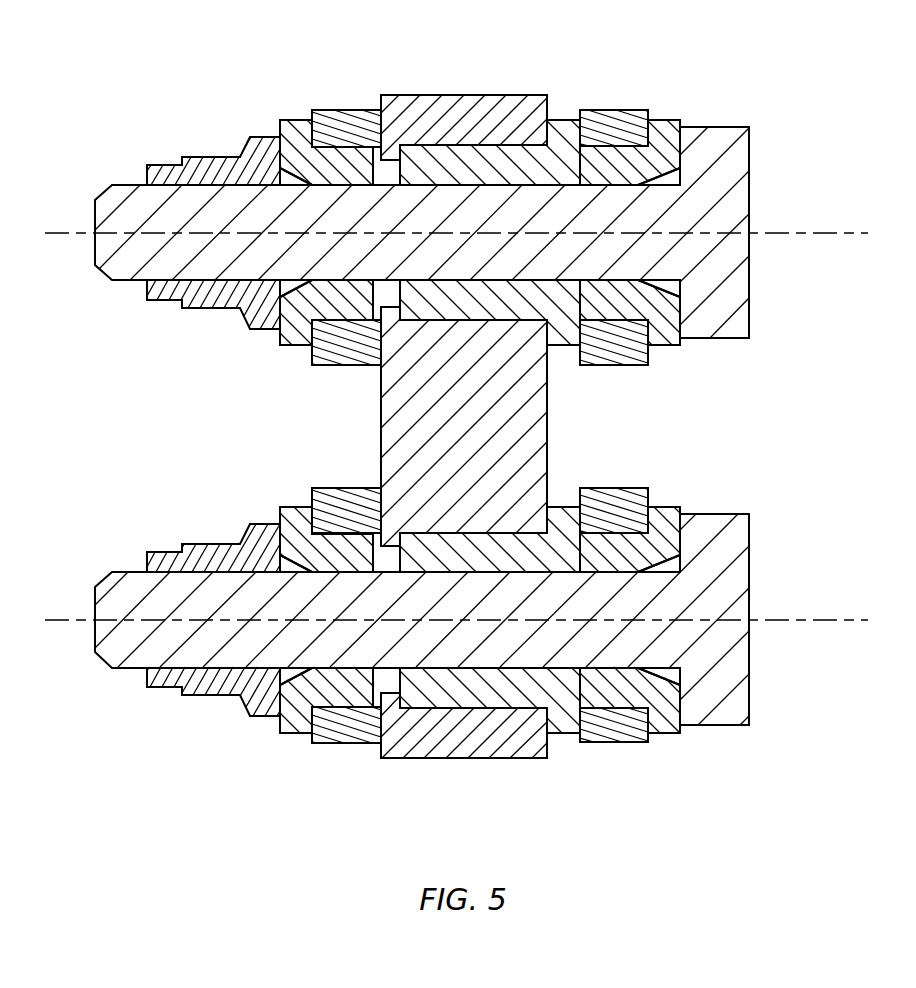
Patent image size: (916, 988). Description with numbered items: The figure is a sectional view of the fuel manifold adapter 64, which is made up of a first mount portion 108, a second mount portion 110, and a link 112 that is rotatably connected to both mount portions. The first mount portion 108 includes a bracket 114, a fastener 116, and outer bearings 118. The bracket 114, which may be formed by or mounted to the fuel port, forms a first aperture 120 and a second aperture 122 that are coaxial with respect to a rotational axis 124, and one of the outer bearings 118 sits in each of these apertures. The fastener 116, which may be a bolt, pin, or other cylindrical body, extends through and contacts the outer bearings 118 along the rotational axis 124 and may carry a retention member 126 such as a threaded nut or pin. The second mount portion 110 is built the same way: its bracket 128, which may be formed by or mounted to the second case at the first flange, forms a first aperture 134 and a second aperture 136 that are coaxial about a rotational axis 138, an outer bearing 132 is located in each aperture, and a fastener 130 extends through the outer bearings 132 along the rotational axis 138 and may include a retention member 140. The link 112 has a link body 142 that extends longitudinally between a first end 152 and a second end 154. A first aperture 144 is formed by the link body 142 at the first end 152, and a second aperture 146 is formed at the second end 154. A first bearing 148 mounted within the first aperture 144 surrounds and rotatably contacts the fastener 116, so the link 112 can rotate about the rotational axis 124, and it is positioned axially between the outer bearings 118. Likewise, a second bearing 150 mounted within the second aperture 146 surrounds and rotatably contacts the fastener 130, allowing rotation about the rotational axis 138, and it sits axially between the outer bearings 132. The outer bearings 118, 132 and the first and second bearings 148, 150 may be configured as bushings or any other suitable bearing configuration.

The fuel manifold adapter 64 is at (466, 430).
The first mount portion 108 is at (762, 204).
The second mount portion 110 is at (762, 647).
The link 112 is at (556, 423).
The bracket 114 is at (343, 113).
The fastener 116 is at (480, 208).
The outer bearings 118 is at (300, 123).
The first aperture 120 is at (333, 188).
The second aperture 122 is at (627, 188).
The rotational axis 124 is at (857, 233).
The retention member 126 is at (262, 135).
The bracket 128 is at (343, 732).
The fastener 130 is at (480, 647).
The outer bearings 132 is at (663, 515).
The first aperture 134 is at (332, 665).
The second aperture 136 is at (626, 665).
The rotational axis 138 is at (857, 620).
The retention member 140 is at (265, 707).
The link body 142 is at (397, 450).
The first aperture 144 is at (463, 324).
The second aperture 146 is at (478, 527).
The first bearing 148 is at (563, 135).
The second bearing 150 is at (565, 730).
The first end 152 is at (524, 105).
The second end 154 is at (510, 748).